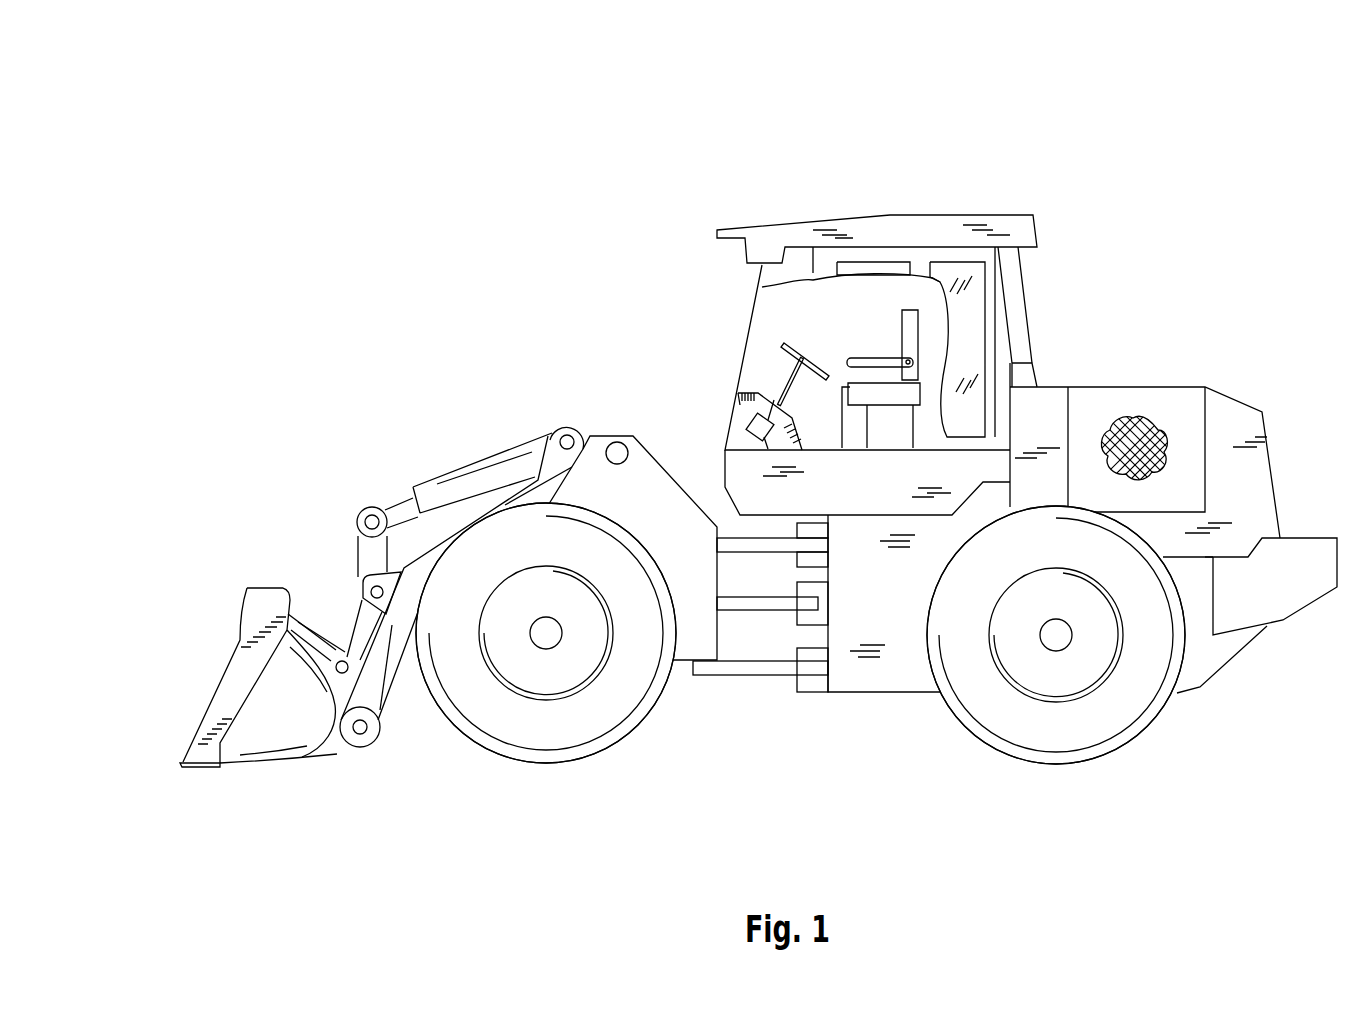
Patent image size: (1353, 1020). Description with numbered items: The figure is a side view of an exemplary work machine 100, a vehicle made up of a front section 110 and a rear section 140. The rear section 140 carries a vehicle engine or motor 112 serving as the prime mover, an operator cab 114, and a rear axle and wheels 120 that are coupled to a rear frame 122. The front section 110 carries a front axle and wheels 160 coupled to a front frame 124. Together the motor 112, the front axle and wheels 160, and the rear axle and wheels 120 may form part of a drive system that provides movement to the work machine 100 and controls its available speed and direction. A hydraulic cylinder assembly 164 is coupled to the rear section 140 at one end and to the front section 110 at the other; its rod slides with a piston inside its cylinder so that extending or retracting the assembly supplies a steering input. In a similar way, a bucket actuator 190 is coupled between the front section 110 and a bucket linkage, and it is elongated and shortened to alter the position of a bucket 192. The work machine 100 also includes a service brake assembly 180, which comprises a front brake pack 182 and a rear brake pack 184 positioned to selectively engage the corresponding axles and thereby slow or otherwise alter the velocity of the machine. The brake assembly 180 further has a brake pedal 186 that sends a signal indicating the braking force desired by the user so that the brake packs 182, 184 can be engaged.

The work machine 100 is at (552, 156).
The front section 110 is at (550, 412).
The vehicle engine or motor 112 is at (1157, 410).
The operator cab 114 is at (950, 212).
The rear axle and wheels 120 is at (1089, 770).
The rear frame 122 is at (883, 692).
The front frame 124 is at (681, 667).
The rear section 140 is at (1114, 346).
The front axle and wheels 160 is at (518, 771).
The hydraulic cylinder assembly 164 is at (762, 614).
The service brake assembly 180 is at (595, 768).
The front brake pack 182 is at (523, 665).
The rear brake pack 184 is at (1087, 655).
The brake pedal 186 is at (752, 420).
The bucket actuator 190 is at (451, 480).
The bucket 192 is at (222, 662).